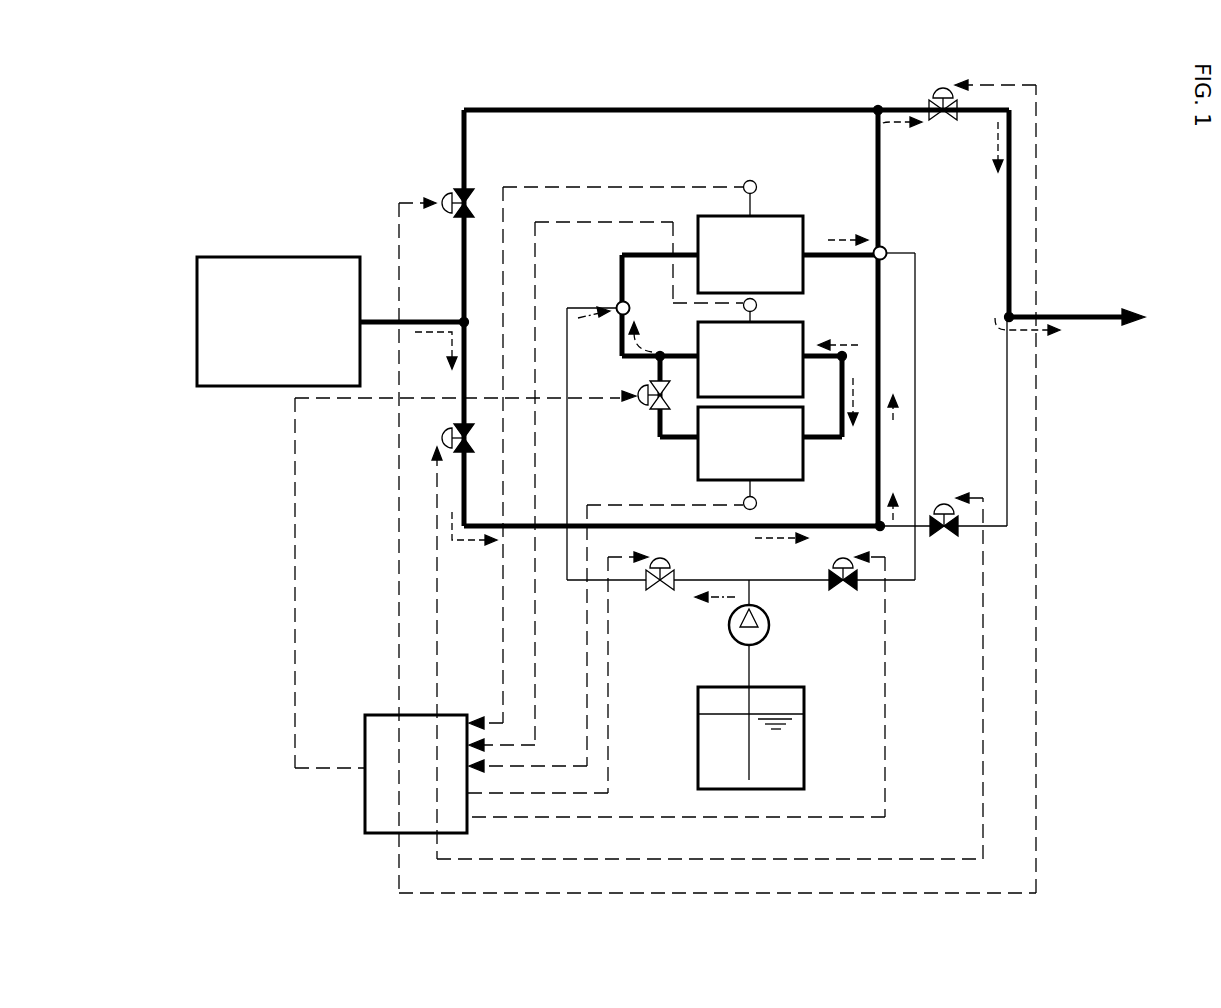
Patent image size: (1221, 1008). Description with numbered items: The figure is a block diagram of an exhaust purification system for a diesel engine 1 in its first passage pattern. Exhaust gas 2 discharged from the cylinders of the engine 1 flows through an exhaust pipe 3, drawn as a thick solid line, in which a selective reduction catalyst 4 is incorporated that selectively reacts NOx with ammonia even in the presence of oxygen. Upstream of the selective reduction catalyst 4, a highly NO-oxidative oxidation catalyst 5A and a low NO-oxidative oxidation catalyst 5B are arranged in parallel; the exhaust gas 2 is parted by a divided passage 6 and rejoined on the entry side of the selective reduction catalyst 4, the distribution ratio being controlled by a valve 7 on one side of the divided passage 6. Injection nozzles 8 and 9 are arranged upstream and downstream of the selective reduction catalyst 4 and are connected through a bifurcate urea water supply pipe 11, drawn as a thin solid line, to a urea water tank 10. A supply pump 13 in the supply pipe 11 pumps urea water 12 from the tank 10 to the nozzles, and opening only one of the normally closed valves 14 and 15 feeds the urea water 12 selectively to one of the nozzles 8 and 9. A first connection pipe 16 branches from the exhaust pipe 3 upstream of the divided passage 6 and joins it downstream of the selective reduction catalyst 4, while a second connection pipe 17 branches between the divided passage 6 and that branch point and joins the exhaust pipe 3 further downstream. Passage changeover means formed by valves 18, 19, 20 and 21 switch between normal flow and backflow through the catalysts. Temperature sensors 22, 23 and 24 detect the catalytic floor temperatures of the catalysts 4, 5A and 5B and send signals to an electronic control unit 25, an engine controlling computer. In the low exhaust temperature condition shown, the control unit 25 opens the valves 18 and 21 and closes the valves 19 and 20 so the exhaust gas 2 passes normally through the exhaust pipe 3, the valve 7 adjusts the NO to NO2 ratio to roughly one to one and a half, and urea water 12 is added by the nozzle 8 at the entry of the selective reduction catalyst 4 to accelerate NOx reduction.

The engine 1 is at (291, 270).
The exhaust gas 2 is at (434, 338).
The exhaust pipe 3 is at (712, 530).
The selective reduction catalyst 4 is at (782, 236).
The highly NO-oxidative oxidation catalyst 5A is at (788, 335).
The low NO-oxidative oxidation catalyst 5B is at (788, 455).
The divided passage 6 is at (660, 445).
The valve 7 is at (645, 410).
The injection nozzle 8 is at (617, 306).
The injection nozzle 9 is at (887, 252).
The urea water tank 10 is at (804, 733).
The urea water supply pipe 11 is at (750, 598).
The urea water 12 is at (578, 320).
The supply pump 13 is at (770, 640).
The normally closed valve 14 is at (658, 598).
The normally closed valve 15 is at (838, 595).
The first connection pipe 16 is at (464, 120).
The second connection pipe 17 is at (1007, 415).
The valve 18 is at (470, 454).
The valve 19 is at (455, 190).
The valve 20 is at (945, 540).
The valve 21 is at (945, 122).
The temperature sensor 22 is at (753, 181).
The temperature sensor 23 is at (757, 304).
The temperature sensor 24 is at (757, 504).
The electronic control unit 25 is at (365, 810).